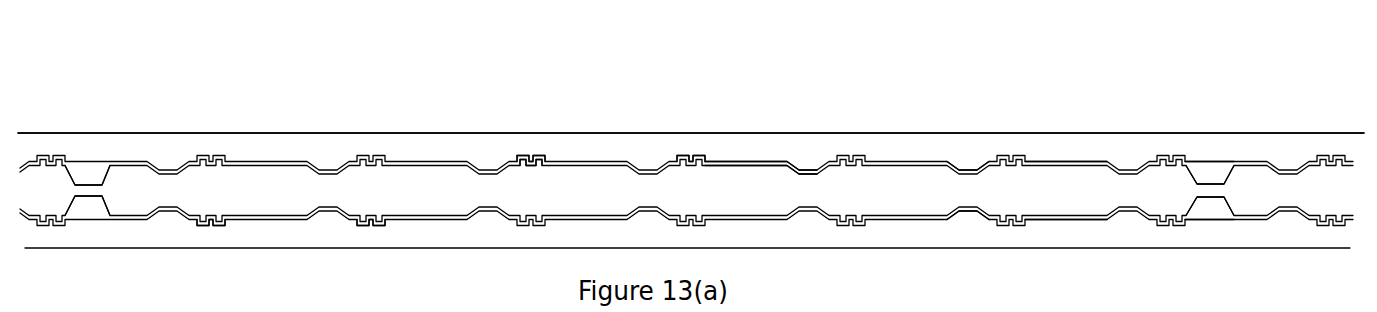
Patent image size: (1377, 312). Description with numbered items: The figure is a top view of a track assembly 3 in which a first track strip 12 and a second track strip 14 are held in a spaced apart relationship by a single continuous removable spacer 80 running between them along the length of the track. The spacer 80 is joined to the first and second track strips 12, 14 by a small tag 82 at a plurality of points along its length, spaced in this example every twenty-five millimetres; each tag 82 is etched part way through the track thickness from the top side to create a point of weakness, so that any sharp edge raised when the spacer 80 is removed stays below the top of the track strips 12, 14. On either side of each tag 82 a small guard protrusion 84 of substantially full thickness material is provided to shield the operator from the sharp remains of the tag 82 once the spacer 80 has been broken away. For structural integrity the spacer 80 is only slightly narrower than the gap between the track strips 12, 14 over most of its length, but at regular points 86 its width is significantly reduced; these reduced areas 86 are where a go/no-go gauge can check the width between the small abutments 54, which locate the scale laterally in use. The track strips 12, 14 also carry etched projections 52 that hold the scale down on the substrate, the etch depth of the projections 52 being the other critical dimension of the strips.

The multilayer tube wall 3 is at (333, 91).
The first track strip 12 is at (1263, 241).
The second track strip 14 is at (1115, 140).
The projections 52 is at (976, 160).
The small abutments 54 is at (1054, 158).
The removable spacer 80 is at (840, 56).
The small tag 82 is at (694, 148).
The guard protrusion 84 is at (537, 160).
The points of reduced spacer width 86 is at (83, 184).